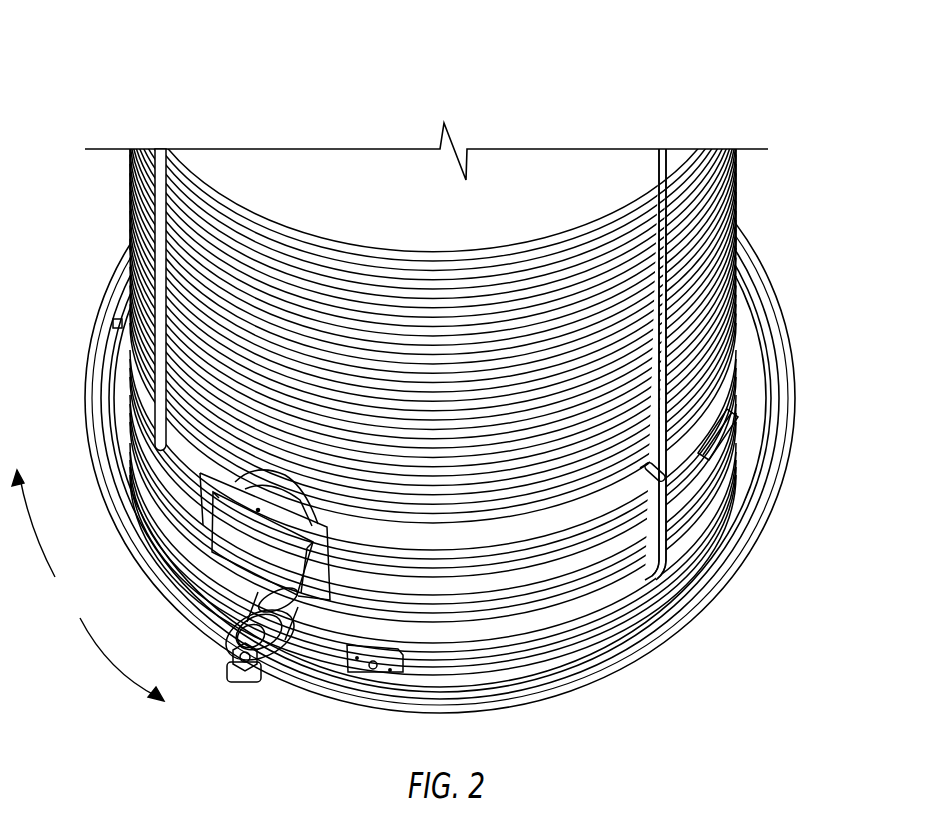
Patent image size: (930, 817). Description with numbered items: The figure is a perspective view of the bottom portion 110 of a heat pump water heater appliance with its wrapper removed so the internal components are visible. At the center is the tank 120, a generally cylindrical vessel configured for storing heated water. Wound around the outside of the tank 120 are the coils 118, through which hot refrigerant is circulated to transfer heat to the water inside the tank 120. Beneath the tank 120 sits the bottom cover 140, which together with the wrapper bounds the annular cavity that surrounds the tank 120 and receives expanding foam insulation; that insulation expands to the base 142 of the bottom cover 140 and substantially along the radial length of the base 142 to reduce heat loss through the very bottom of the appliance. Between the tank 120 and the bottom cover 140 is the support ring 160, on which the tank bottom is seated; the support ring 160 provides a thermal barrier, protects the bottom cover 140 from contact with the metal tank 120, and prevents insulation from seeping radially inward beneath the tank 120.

The bottom portion 110 is at (453, 382).
The coils 118 is at (737, 193).
The tank 120 is at (612, 160).
The bottom cover 140 is at (402, 398).
The base 142 is at (110, 378).
The support ring 160 is at (725, 527).